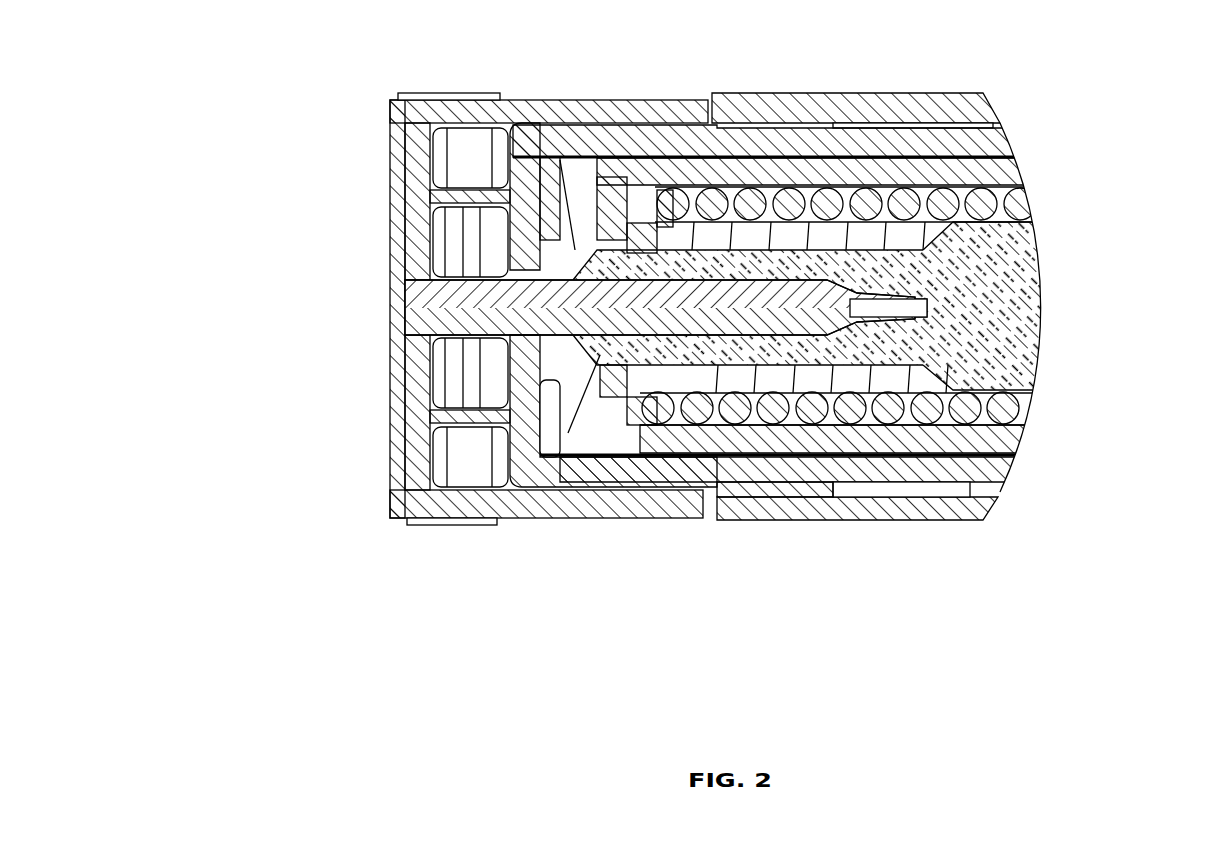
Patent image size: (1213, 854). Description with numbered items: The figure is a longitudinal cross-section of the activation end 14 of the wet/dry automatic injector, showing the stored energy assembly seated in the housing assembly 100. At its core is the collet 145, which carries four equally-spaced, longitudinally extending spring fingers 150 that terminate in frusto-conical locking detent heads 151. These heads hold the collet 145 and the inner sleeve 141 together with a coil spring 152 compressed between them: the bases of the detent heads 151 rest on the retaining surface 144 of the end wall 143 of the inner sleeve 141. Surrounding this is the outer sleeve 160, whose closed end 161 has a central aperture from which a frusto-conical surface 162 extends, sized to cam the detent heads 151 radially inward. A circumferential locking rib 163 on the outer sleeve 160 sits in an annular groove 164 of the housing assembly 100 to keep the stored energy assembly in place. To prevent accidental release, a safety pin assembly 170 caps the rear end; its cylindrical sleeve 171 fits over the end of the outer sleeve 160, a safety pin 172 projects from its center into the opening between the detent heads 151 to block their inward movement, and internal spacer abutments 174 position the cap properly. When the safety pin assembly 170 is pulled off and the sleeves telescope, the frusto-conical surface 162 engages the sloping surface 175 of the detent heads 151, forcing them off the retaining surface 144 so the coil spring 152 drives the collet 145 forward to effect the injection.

The activation end 14 is at (214, 337).
The housing assembly 100 is at (978, 103).
The inner sleeve 141 is at (1007, 128).
The end wall 143 is at (670, 192).
The retaining surface 144 is at (622, 358).
The collet 145 is at (1008, 288).
The spring fingers 150 is at (790, 266).
The locking detent heads 151 is at (577, 248).
The coil spring 152 is at (925, 375).
The outer sleeve 160 is at (957, 472).
The closed end 161 is at (521, 428).
The frusto-conical surface 162 is at (580, 333).
The circumferential locking rib 163 is at (812, 490).
The annular groove 164 is at (800, 495).
The safety pin assembly 170 is at (437, 308).
The cylindrical sleeve 171 is at (601, 498).
The safety pin 172 is at (731, 305).
The spacer abutments 174 is at (468, 200).
The sloping surface 175 is at (493, 100).